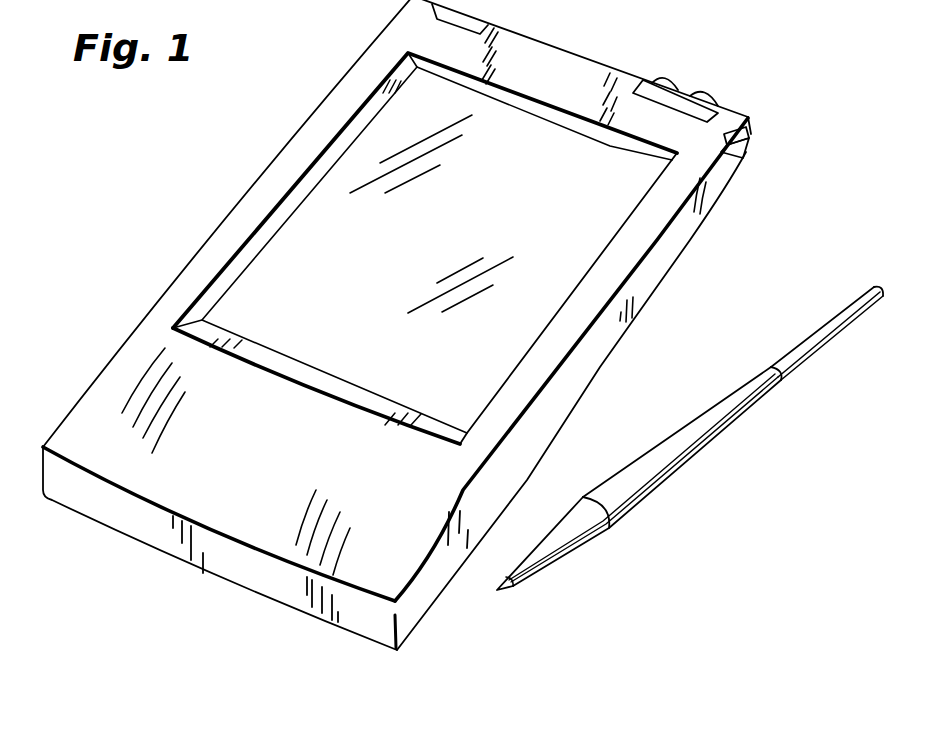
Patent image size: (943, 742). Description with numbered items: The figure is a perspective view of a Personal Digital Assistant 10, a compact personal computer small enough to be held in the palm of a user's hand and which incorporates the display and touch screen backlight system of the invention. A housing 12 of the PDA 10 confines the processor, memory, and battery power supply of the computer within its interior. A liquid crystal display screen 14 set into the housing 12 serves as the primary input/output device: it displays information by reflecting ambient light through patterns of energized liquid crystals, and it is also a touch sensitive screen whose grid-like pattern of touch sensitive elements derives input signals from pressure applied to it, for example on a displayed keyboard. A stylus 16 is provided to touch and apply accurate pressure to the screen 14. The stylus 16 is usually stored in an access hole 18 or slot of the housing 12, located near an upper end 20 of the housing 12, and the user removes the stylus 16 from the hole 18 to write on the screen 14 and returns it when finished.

The Personal Digital Assistant 10 is at (113, 296).
The housing 12 is at (100, 427).
The LCD screen 14 is at (315, 220).
The stylus 16 is at (650, 495).
The access hole 18 is at (743, 157).
The upper end 20 is at (540, 40).